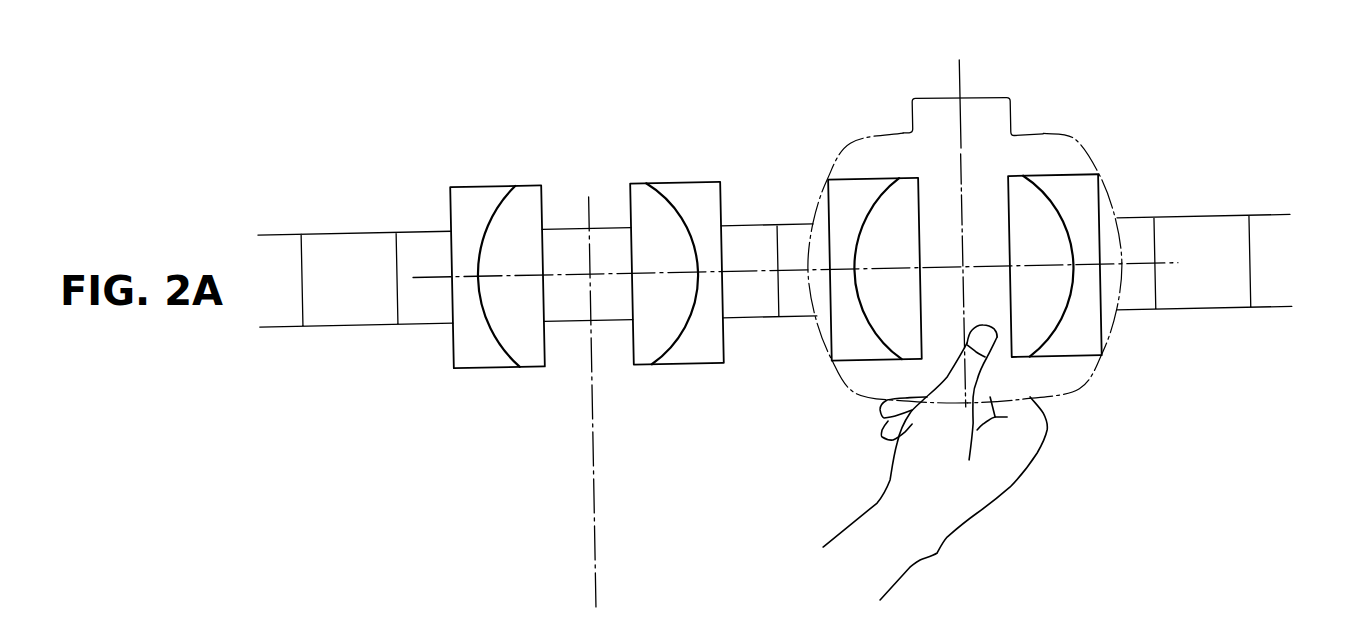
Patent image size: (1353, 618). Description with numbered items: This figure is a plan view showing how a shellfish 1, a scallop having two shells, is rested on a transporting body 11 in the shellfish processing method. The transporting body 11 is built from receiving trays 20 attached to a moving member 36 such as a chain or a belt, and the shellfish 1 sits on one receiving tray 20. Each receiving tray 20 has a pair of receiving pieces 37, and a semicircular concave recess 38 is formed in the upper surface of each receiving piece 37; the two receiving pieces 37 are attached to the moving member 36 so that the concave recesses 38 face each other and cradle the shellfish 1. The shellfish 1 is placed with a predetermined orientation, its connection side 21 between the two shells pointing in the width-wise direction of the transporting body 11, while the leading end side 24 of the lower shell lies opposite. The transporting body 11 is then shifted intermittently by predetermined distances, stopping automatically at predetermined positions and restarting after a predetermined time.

The shellfish 1 is at (1046, 152).
The transporting body 11 is at (339, 93).
The receiving tray 20 is at (733, 144).
The connection side 21 is at (988, 114).
The leading end side 24 is at (1055, 385).
The moving member 36 is at (356, 247).
The receiving piece 37 is at (476, 201).
The concave recess 38 is at (516, 349).